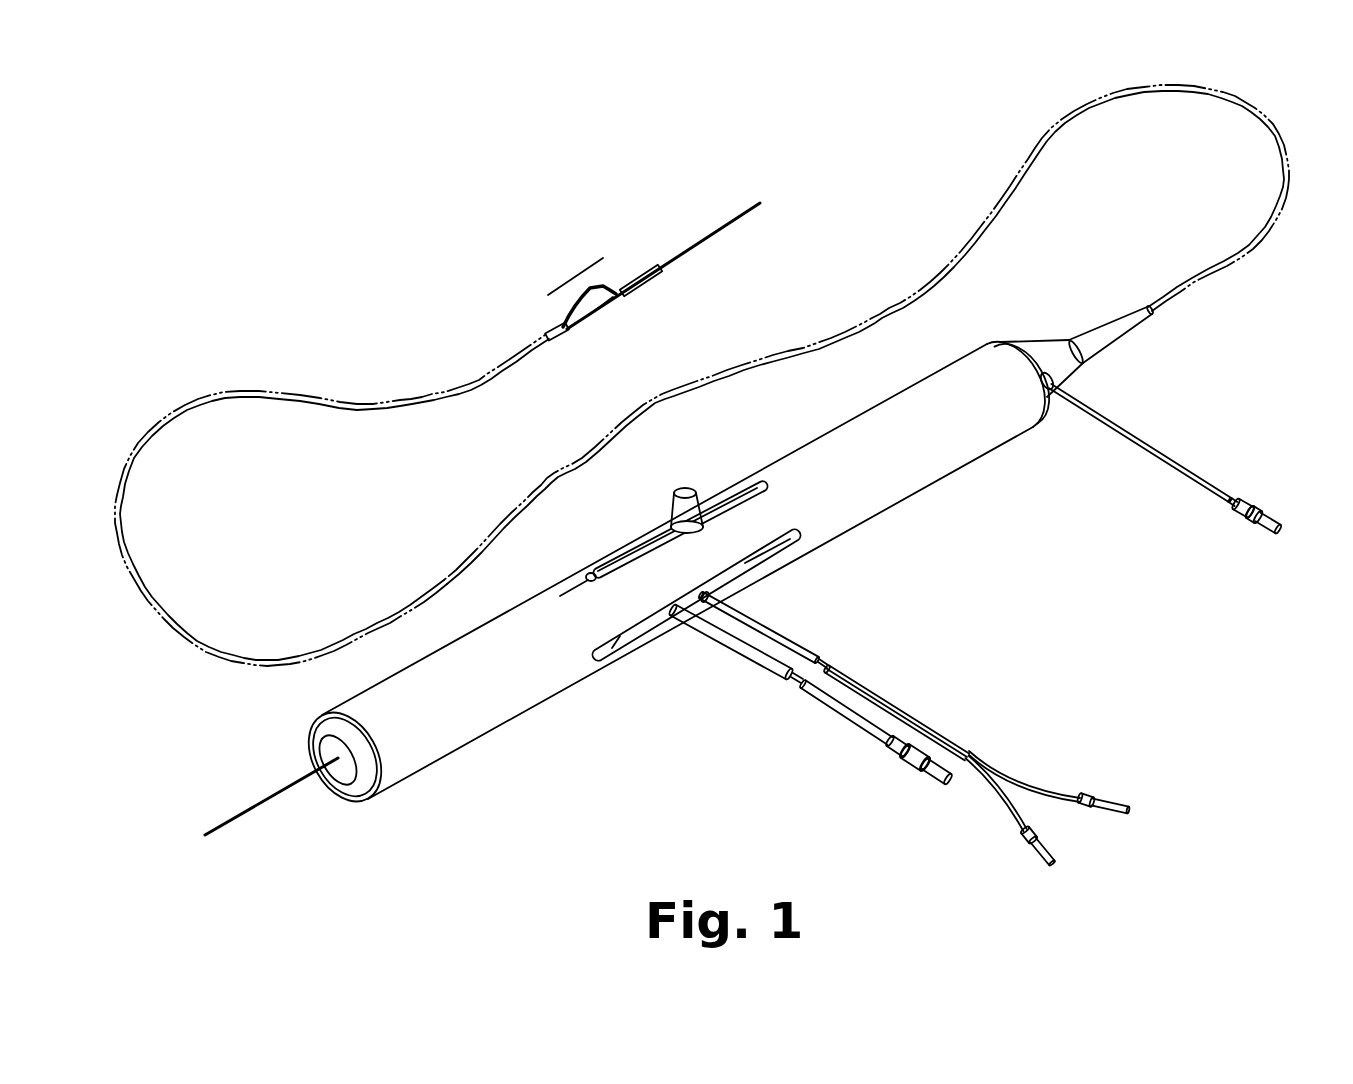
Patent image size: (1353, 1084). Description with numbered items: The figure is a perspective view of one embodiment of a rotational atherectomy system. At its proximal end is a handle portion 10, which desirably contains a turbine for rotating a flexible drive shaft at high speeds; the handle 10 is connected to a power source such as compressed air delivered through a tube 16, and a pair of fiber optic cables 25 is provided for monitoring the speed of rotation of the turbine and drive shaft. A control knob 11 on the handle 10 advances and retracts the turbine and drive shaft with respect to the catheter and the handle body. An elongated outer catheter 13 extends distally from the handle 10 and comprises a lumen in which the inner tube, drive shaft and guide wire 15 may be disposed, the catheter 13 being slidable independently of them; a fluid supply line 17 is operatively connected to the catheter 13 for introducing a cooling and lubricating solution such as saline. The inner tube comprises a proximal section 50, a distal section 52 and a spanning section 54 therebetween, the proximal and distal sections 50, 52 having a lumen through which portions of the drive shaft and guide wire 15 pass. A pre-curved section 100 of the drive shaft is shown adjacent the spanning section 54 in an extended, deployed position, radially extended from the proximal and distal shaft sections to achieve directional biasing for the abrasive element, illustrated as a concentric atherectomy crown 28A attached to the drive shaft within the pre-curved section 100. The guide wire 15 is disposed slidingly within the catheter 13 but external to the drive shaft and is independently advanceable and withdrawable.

The handle portion 10 is at (857, 440).
The control knob 11 is at (688, 490).
The outer catheter 13 is at (1040, 138).
The guide wire 15 is at (683, 253).
The tube 16 is at (771, 668).
The fluid supply line 17 is at (1147, 443).
The fiber optic cables 25 is at (787, 643).
The concentric atherectomy crown 28A is at (570, 290).
The inner tube proximal section 50 is at (560, 342).
The inner tube distal section 52 is at (627, 277).
The spanning section 54 is at (597, 313).
The pre-curved section 100 is at (570, 267).